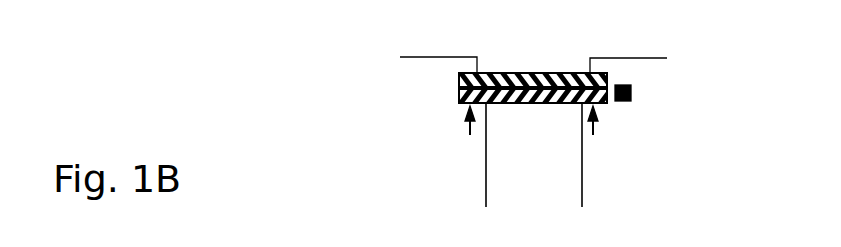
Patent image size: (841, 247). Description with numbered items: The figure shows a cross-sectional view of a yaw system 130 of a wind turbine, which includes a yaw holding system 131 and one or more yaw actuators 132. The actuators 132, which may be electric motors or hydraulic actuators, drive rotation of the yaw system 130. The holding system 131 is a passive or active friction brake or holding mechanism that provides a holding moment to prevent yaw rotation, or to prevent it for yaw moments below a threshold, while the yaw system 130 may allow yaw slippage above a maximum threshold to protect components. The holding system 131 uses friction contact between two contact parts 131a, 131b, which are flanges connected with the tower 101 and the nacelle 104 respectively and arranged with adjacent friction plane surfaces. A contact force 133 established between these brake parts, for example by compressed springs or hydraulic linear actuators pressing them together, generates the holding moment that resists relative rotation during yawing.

The tower 101 is at (585, 175).
The nacelle 104 is at (623, 55).
The yaw system 130 is at (449, 85).
The yaw holding system 131 is at (449, 102).
The contact part 131a is at (458, 83).
The contact part 131b is at (449, 120).
The yaw actuator 132 is at (632, 92).
The contact force 133 is at (467, 127).